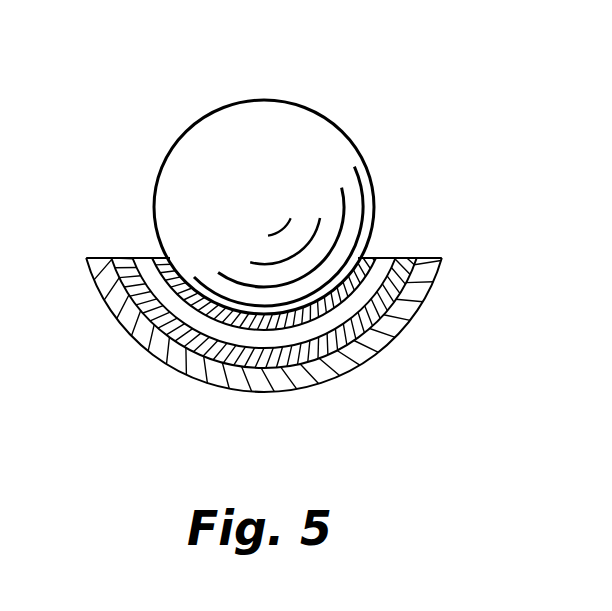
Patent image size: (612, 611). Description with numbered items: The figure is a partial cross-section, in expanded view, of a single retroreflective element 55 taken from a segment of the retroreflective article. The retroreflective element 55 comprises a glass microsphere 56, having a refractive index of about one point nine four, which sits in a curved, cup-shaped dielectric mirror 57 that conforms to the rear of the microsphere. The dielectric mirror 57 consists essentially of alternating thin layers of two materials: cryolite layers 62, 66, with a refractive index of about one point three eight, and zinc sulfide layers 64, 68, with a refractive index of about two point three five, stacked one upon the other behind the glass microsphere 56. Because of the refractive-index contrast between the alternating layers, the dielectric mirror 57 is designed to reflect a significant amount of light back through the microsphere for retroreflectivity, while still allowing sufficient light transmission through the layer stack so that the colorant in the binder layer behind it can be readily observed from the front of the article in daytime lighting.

The retroreflective element 55 is at (393, 50).
The glass microsphere 56 is at (232, 162).
The dielectric mirror 57 is at (265, 230).
The cryolite layer 62 is at (172, 278).
The zinc sulfide layer 64 is at (192, 322).
The cryolite layer 66 is at (320, 350).
The zinc sulfide layer 68 is at (400, 315).